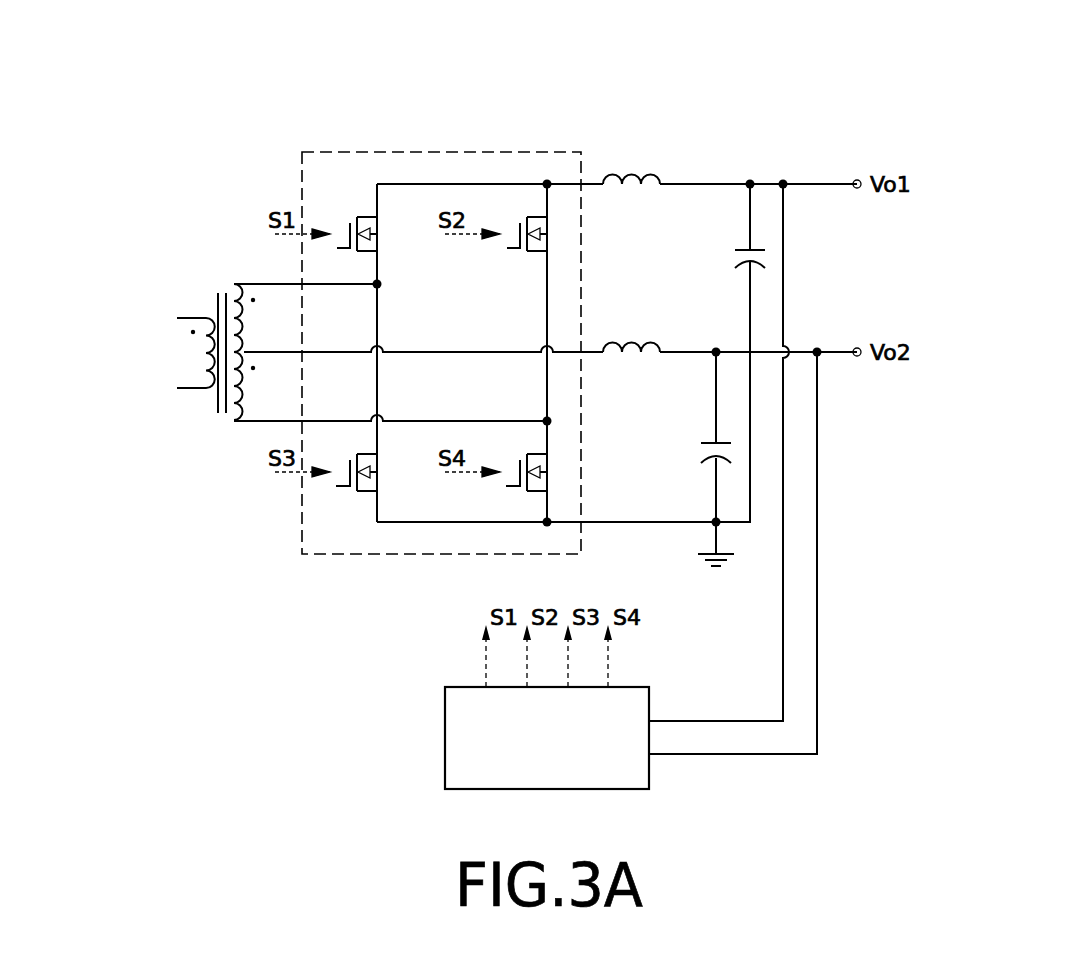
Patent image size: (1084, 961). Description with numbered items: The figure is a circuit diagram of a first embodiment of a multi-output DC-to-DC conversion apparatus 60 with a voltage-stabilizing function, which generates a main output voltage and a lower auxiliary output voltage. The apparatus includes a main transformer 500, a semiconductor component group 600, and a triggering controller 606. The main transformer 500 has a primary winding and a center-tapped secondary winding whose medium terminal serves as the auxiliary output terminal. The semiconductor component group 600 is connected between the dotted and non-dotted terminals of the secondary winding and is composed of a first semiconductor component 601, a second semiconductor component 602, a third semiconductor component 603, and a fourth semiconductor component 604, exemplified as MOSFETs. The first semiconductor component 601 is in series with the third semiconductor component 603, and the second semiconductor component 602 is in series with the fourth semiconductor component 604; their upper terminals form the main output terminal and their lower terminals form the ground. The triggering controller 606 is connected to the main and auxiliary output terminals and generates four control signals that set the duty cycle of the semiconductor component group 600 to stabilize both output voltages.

The multi-output DC-to-DC conversion apparatus 60 is at (562, 45).
The main transformer 500 is at (212, 306).
The semiconductor component group 600 is at (441, 152).
The first semiconductor component 601 is at (355, 218).
The second semiconductor component 602 is at (521, 253).
The third semiconductor component 603 is at (352, 492).
The fourth semiconductor component 604 is at (548, 463).
The triggering controller 606 is at (450, 738).